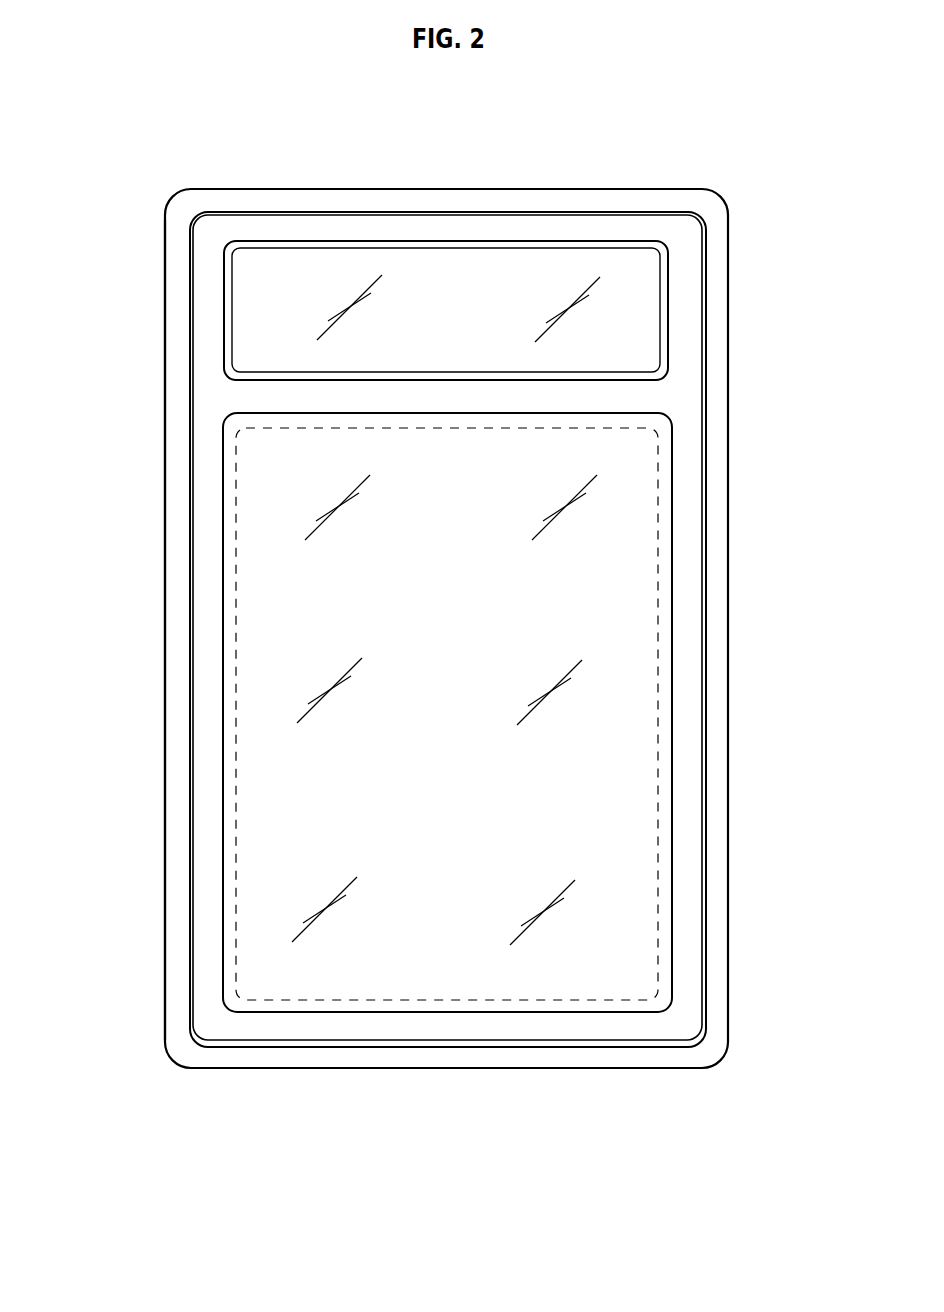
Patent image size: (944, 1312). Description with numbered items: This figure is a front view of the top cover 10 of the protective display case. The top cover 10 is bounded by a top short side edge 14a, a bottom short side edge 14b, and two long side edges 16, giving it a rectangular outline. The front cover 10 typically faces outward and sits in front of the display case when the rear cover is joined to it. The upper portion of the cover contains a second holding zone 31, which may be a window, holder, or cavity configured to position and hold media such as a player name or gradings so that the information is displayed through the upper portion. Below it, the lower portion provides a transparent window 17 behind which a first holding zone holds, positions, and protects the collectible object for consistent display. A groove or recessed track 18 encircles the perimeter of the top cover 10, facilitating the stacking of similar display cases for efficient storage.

The top cover 10 is at (153, 187).
The top short side edge 14a is at (547, 189).
The bottom short side edge 14b is at (500, 1072).
The long side edges 16 is at (165, 610).
The transparent window 17 is at (613, 777).
The recessed track 18 is at (695, 1032).
The second holding zone 31 is at (634, 311).